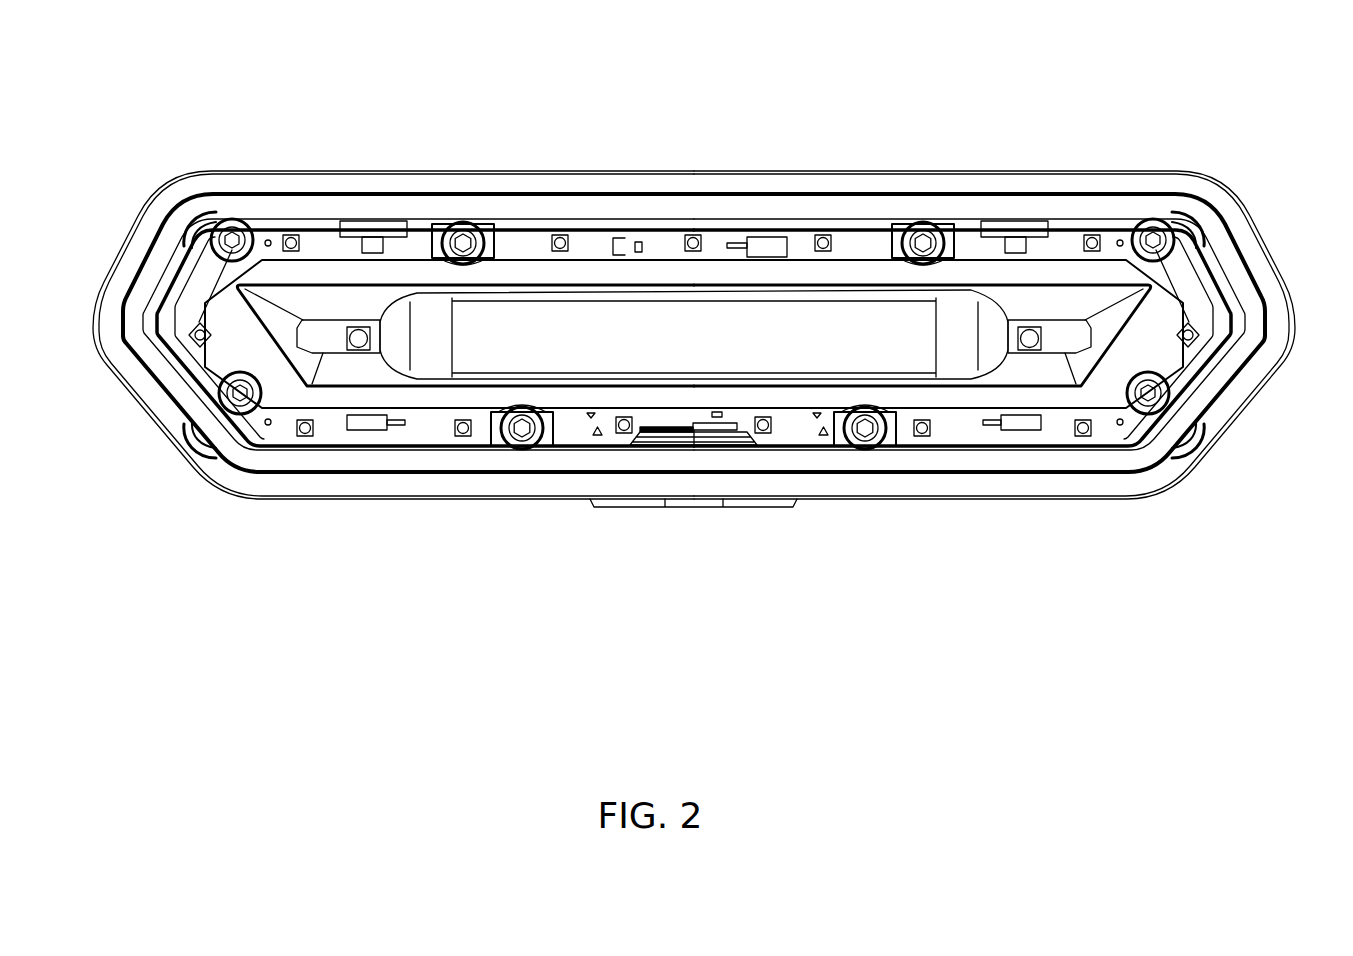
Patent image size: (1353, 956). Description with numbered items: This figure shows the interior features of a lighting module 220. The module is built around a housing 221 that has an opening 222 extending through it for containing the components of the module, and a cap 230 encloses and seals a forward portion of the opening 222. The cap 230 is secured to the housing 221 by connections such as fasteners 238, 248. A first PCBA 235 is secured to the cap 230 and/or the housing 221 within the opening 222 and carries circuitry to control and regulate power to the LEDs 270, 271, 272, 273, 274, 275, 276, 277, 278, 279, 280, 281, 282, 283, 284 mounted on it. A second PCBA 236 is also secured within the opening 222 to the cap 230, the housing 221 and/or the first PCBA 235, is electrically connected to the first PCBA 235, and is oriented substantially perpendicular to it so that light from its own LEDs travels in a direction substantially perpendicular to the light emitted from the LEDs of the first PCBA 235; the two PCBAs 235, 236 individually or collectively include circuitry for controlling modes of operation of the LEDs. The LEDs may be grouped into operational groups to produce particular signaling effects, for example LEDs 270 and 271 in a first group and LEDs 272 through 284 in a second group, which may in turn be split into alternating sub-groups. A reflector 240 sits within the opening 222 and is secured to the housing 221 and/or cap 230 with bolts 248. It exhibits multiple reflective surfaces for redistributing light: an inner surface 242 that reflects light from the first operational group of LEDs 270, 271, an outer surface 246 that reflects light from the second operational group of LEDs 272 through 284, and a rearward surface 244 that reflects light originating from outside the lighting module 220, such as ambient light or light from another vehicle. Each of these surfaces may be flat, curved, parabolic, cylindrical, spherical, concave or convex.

The lighting module 220 is at (660, 605).
The housing 221 is at (1250, 373).
The opening 222 is at (1197, 410).
The cap 230 is at (1154, 222).
The first PCBA 235 is at (845, 243).
The second PCBA 236 is at (700, 447).
The fastener 238 is at (230, 220).
The reflector 240 is at (633, 330).
The inner surface 242 is at (385, 380).
The rearward surface 244 is at (1005, 398).
The outer surface 246 is at (772, 257).
The bolt 248 is at (463, 222).
The LED 270 is at (357, 328).
The LED 271 is at (1029, 328).
The LED 272 is at (693, 235).
The LED 273 is at (823, 235).
The LED 274 is at (1092, 235).
The LED 275 is at (1207, 203).
The LED 276 is at (1083, 436).
The LED 277 is at (922, 436).
The LED 278 is at (763, 433).
The LED 279 is at (623, 433).
The LED 280 is at (463, 436).
The LED 281 is at (305, 436).
The LED 282 is at (182, 218).
The LED 283 is at (291, 235).
The LED 284 is at (560, 235).